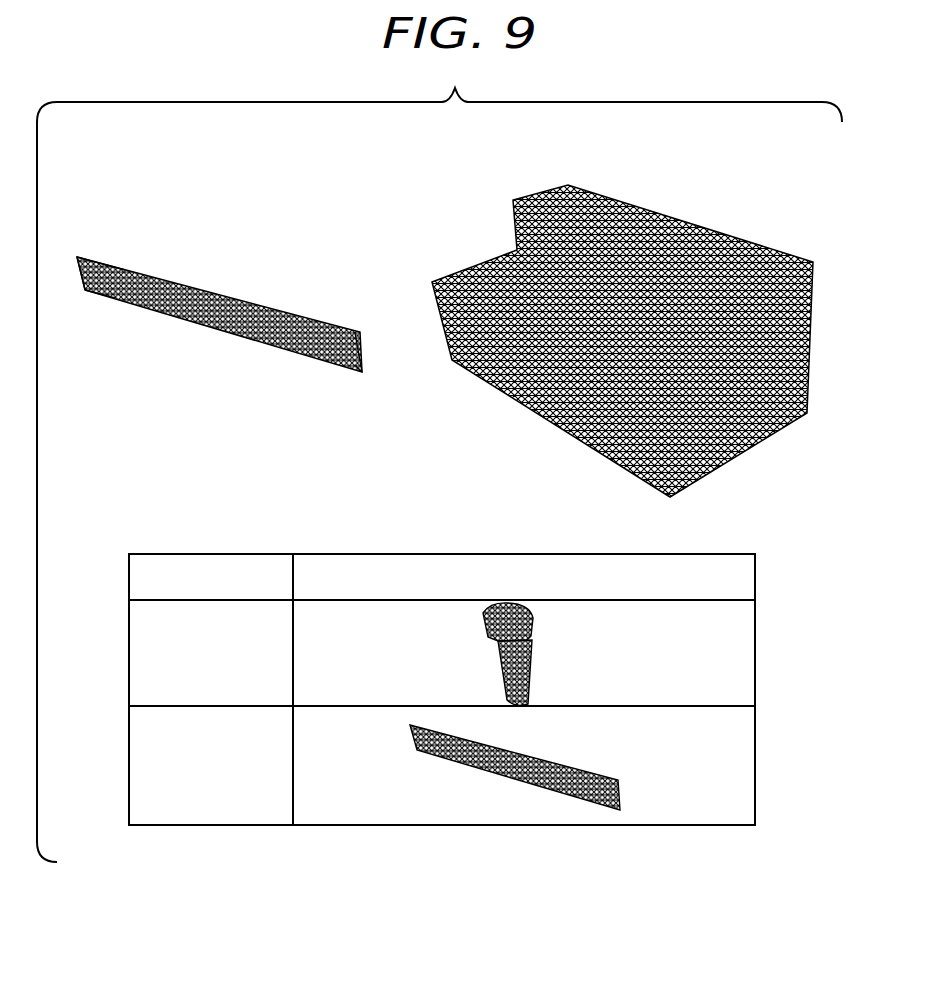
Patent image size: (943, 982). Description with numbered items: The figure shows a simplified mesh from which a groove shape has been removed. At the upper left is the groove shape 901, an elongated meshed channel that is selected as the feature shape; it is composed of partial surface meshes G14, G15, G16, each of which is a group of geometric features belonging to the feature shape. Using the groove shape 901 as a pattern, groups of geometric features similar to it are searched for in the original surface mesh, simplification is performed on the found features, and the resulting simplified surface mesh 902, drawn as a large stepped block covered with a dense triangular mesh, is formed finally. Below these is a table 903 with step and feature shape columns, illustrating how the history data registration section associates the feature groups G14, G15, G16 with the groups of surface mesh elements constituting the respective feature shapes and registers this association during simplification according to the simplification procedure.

The groove shape 901 is at (193, 282).
The surface mesh 902 is at (653, 208).
The table 903 is at (756, 634).
The partial surface mesh G14 is at (362, 373).
The partial surface mesh G15 is at (108, 297).
The partial surface mesh G16 is at (123, 263).